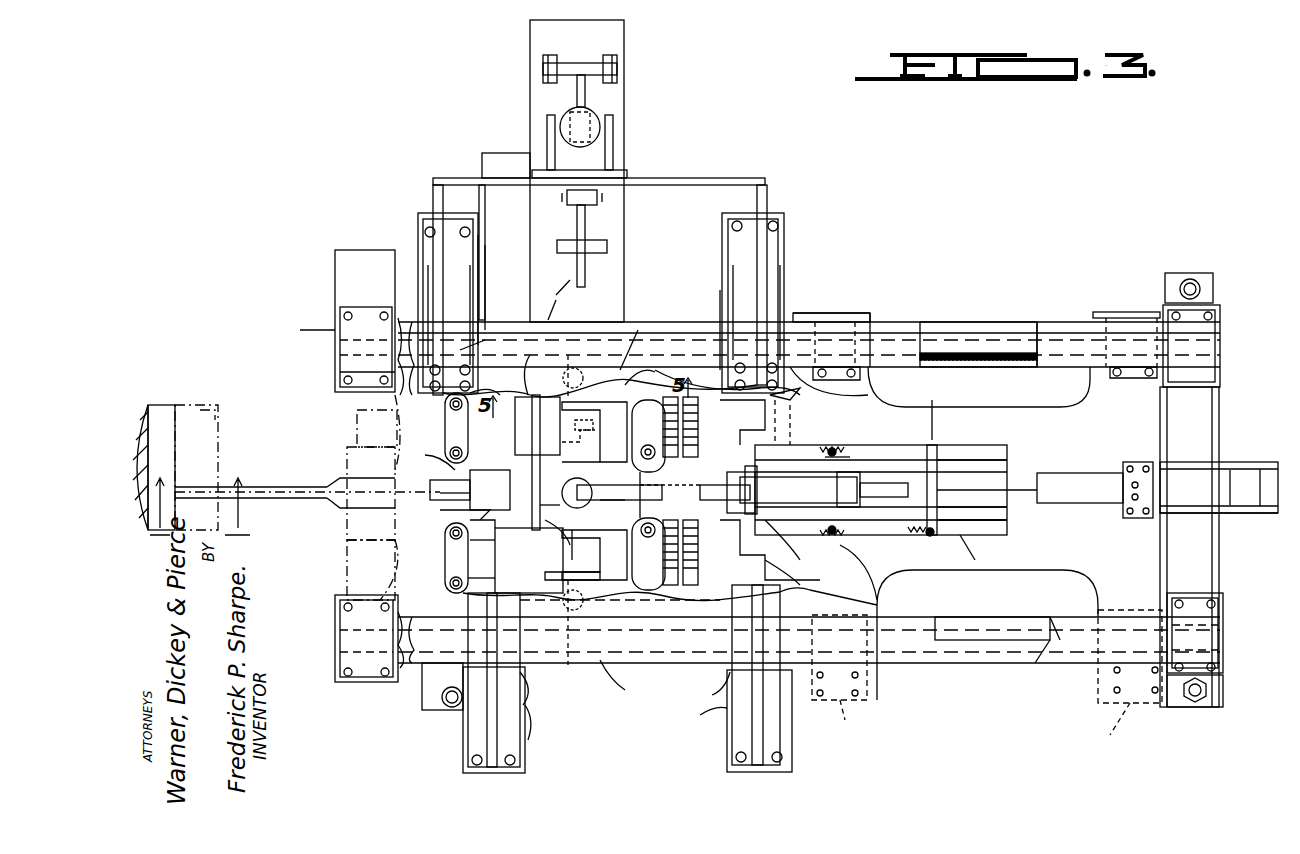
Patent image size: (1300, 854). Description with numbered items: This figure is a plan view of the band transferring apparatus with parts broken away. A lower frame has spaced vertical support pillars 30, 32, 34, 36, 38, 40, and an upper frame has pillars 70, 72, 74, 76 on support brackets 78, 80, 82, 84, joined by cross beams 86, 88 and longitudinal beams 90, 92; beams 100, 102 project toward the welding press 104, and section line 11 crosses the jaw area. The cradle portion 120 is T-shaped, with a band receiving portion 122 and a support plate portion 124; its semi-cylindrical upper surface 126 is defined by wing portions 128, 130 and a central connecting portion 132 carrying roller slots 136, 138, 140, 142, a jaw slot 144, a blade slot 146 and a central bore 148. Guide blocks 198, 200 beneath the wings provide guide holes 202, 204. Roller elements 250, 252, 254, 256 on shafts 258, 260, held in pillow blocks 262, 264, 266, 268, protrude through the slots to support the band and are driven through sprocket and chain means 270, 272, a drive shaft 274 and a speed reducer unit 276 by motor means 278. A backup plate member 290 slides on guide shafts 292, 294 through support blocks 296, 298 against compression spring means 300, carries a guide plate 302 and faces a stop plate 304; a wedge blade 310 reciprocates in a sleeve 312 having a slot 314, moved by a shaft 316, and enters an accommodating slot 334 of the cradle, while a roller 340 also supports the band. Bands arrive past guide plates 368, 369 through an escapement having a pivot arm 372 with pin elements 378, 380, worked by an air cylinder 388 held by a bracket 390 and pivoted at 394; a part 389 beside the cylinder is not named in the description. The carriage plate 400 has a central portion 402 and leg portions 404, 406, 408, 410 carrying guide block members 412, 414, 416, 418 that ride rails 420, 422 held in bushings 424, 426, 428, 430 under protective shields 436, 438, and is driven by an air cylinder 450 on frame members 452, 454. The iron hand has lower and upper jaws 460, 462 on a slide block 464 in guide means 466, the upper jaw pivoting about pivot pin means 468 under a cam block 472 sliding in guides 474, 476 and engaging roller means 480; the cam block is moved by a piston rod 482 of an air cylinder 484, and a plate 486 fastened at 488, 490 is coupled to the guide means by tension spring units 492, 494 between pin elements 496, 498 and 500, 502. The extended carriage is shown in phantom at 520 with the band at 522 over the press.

The vertical support pillar 30 is at (542, 694).
The vertical support pillar 32 is at (710, 688).
The vertical support pillar 34 is at (1223, 690).
The vertical support pillar 36 is at (1214, 288).
The vertical support pillar 38 is at (790, 318).
The vertical support pillar 40 is at (420, 318).
The upper vertical pillar 70 is at (470, 740).
The upper vertical pillar 72 is at (735, 745).
The upper vertical pillar 74 is at (775, 248).
The upper vertical pillar 76 is at (430, 246).
The support bracket 78 is at (547, 729).
The support bracket 80 is at (697, 717).
The support bracket 82 is at (718, 280).
The support bracket 84 is at (474, 290).
The cross beam 86 is at (480, 346).
The cross beam 88 is at (790, 625).
The longitudinally extending beam 90 is at (605, 682).
The longitudinally extending beam 92 is at (809, 356).
The longitudinally positioned beam 100 is at (425, 690).
The longitudinally positioned beam 102 is at (335, 320).
The welding press 104 is at (165, 405).
The section line 11- 11 is at (213, 495).
The cradle portion 120 is at (555, 540).
The band receiving and supporting portion 122 is at (581, 462).
The longitudinally extending support plate portion 124 is at (391, 563).
The semi-cylindrical upper surface 126 is at (546, 302).
The T-shaped wing portion 128 is at (601, 432).
The T-shaped wing portion 130 is at (599, 555).
The central connecting portion 132 is at (615, 500).
The roller slot 136 is at (561, 524).
The roller slot 138 is at (586, 544).
The roller slot 140 is at (595, 485).
The roller slot 142 is at (578, 444).
The jaw slot 144 is at (619, 481).
The blade slot 146 is at (543, 506).
The central bore 148 is at (572, 576).
The guide block 198 is at (809, 640).
The guide block 200 is at (625, 330).
The guide hole 202 is at (580, 655).
The guide hole 204 is at (590, 340).
The roller element 250 is at (484, 589).
The roller element 252 is at (670, 490).
The roller element 254 is at (610, 395).
The roller element 256 is at (526, 366).
The shaft 258 is at (445, 583).
The shaft 260 is at (445, 430).
The pillow block 262 is at (470, 545).
The pillow block 264 is at (645, 640).
The pillow block 266 is at (703, 485).
The pillow block 268 is at (378, 432).
The sprocket and chain drive means 270 is at (698, 565).
The sprocket and chain drive means 272 is at (742, 457).
The drive shaft 274 is at (729, 460).
The speed reducer unit 276 is at (807, 389).
The motor means 278 is at (801, 575).
The backup plate member 290 is at (587, 428).
The guide shaft 292 is at (453, 484).
The guide shaft 294 is at (459, 510).
The support block 296 is at (419, 454).
The support block 298 is at (484, 530).
The compression spring means 300 is at (470, 470).
The guide plate 302 is at (490, 384).
The stop plate 304 is at (531, 426).
The wedge blade 310 is at (529, 560).
The longitudinal sleeve 312 is at (440, 490).
The slot 314 is at (458, 492).
The shaft 316 is at (420, 487).
The accommodating slot 334 is at (552, 462).
The roller 340 is at (660, 370).
The guide plate 368 is at (625, 242).
The guide plate 369 is at (548, 278).
The pivot arm 372 is at (590, 100).
The cylindrical pin element 378 is at (543, 62).
The cylindrical pin element 380 is at (568, 240).
The air cylinder 388 is at (560, 118).
The bracket 389 is at (613, 128).
The bracket 390 is at (627, 172).
The pivot 394 is at (598, 196).
The carriage plate 400 is at (1135, 440).
The central portion 402 is at (1005, 430).
The leg portion 404 is at (870, 690).
The leg portion 406 is at (1098, 690).
The leg portion 408 is at (1098, 312).
The leg portion 410 is at (870, 320).
The guide block member 412 is at (848, 722).
The guide block member 414 is at (1118, 728).
The guide block member 416 is at (1125, 312).
The guide block member 418 is at (850, 313).
The guide and support rail 420 is at (995, 640).
The guide and support rail 422 is at (950, 342).
The bushing 424 is at (360, 680).
The bushing 426 is at (1200, 600).
The bushing 428 is at (1210, 375).
The bushing 430 is at (340, 372).
The protective shield 436 is at (1048, 663).
The protective shield 438 is at (1037, 320).
The air cylinder 450 is at (1225, 480).
The frame member 452 is at (1240, 462).
The frame member 454 is at (1238, 513).
The lower jaw member 460 is at (806, 546).
The upper jaw member 462 is at (742, 486).
The slide block 464 is at (985, 525).
The guide means 466 is at (985, 540).
The pivot pin means 468 is at (770, 490).
The cam block 472 is at (890, 480).
The guide 474 is at (1000, 515).
The guide 476 is at (1007, 468).
The roller means 480 is at (830, 480).
The piston rod 482 is at (1010, 500).
The air cylinder 484 is at (1095, 490).
The plate 486 is at (960, 480).
The fastening point 488 is at (960, 560).
The fastening point 490 is at (935, 470).
The tension spring unit 492 is at (920, 540).
The tension spring unit 494 is at (850, 447).
The pin element 496 is at (838, 537).
The pin element 498 is at (830, 447).
The pin element 500 is at (925, 555).
The pin element 502 is at (942, 408).
The fully extended position 520 is at (222, 410).
The band position 522 is at (190, 400).